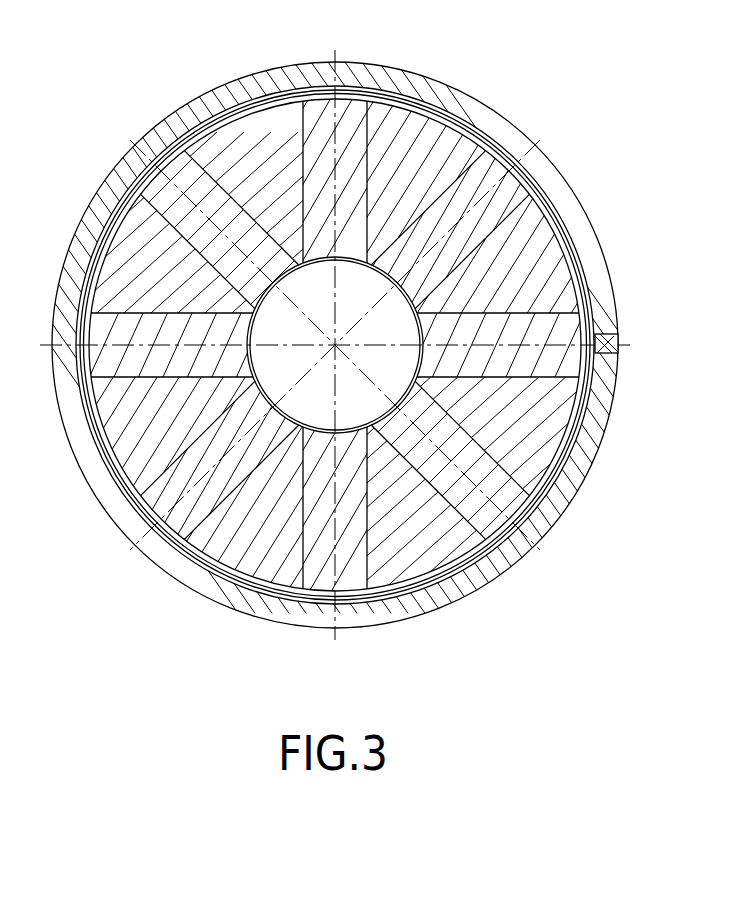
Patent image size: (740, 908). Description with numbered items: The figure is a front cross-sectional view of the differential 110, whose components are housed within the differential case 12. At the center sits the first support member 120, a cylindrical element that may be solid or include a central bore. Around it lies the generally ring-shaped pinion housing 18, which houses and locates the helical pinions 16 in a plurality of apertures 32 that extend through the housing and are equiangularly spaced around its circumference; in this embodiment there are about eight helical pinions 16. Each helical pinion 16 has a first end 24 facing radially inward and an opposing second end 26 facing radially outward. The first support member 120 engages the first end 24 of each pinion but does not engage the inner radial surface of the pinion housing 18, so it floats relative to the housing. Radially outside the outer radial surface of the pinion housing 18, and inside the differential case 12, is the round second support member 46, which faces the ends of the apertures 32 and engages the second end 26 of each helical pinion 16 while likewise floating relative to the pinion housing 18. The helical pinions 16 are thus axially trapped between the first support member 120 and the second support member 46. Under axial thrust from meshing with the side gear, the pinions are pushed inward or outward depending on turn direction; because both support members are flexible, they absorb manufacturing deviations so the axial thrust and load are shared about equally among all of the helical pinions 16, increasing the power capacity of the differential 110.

The differential 110 is at (521, 45).
The differential case 12 is at (506, 130).
The second end 26 is at (178, 150).
The second support member 46 is at (233, 573).
The aperture 32 is at (145, 188).
The helical pinion 16 is at (173, 162).
The pinion housing 18 is at (452, 548).
The first end 24 is at (268, 287).
The first support member 120 is at (310, 425).